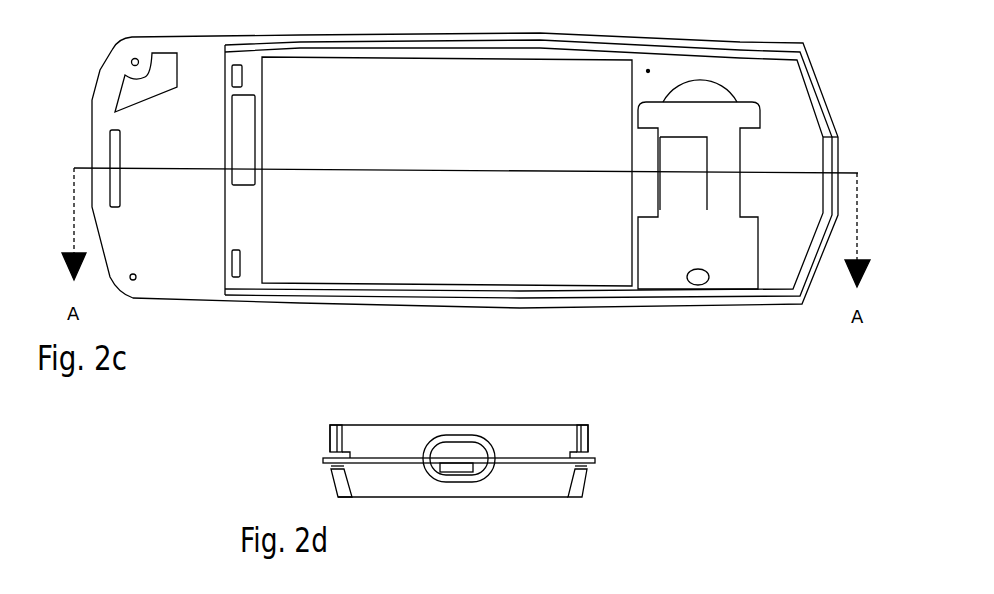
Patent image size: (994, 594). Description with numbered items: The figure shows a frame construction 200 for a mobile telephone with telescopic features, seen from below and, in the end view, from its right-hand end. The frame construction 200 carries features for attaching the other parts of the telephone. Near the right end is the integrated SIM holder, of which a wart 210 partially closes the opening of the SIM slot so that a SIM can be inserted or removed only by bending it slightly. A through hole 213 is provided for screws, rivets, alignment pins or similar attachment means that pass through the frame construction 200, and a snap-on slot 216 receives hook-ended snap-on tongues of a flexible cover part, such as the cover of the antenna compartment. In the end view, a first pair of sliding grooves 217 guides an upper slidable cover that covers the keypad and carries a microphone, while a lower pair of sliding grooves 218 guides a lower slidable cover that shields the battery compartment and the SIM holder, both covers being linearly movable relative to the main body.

In FIG. 2C, the frame construction 200 is at (734, 346).
In FIG. 2C, the wart 210 is at (697, 285).
In FIG. 2C, the through hole 213 is at (134, 280).
In FIG. 2C, the snap-on slot 216 is at (236, 278).
In FIG. 2D, the first pair of sliding grooves 217 is at (330, 450).
In FIG. 2D, the lower pair of sliding grooves 218 is at (337, 468).